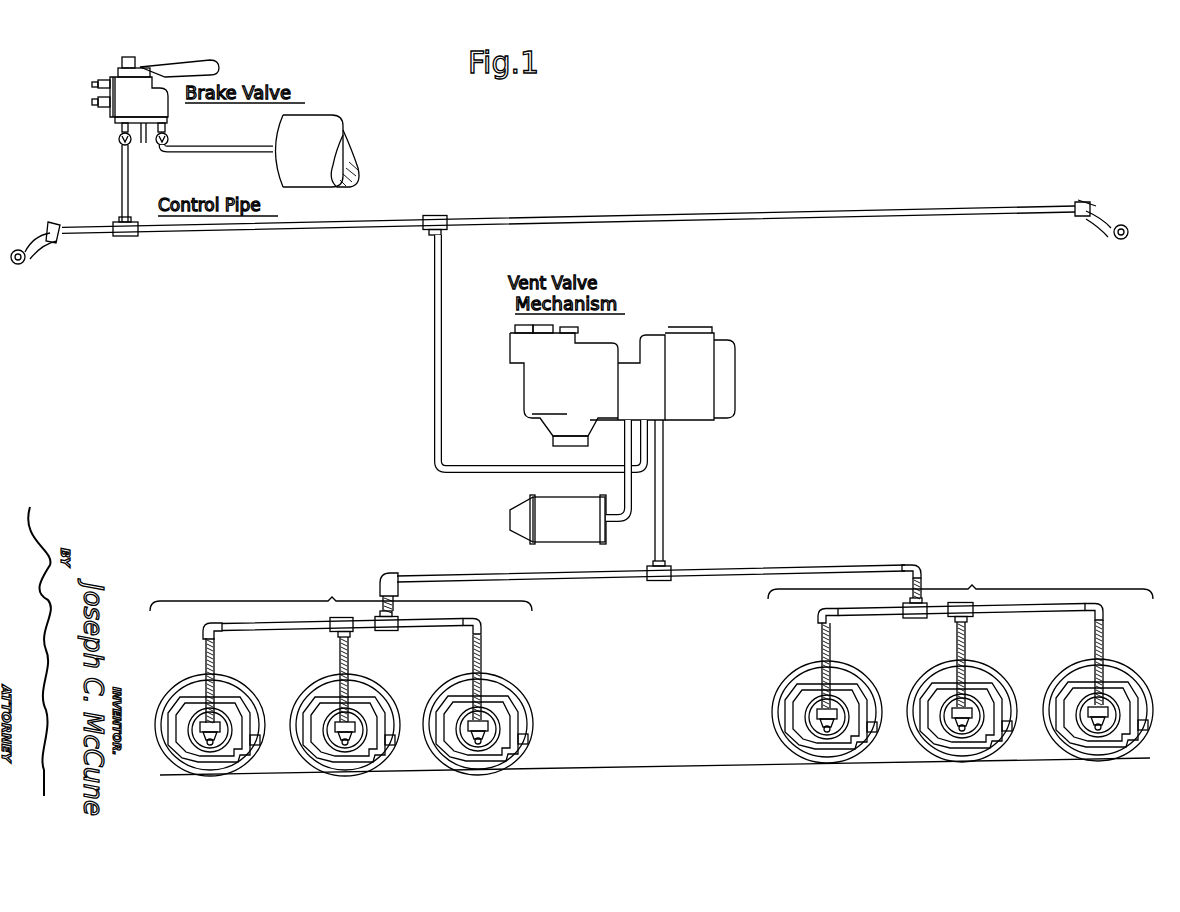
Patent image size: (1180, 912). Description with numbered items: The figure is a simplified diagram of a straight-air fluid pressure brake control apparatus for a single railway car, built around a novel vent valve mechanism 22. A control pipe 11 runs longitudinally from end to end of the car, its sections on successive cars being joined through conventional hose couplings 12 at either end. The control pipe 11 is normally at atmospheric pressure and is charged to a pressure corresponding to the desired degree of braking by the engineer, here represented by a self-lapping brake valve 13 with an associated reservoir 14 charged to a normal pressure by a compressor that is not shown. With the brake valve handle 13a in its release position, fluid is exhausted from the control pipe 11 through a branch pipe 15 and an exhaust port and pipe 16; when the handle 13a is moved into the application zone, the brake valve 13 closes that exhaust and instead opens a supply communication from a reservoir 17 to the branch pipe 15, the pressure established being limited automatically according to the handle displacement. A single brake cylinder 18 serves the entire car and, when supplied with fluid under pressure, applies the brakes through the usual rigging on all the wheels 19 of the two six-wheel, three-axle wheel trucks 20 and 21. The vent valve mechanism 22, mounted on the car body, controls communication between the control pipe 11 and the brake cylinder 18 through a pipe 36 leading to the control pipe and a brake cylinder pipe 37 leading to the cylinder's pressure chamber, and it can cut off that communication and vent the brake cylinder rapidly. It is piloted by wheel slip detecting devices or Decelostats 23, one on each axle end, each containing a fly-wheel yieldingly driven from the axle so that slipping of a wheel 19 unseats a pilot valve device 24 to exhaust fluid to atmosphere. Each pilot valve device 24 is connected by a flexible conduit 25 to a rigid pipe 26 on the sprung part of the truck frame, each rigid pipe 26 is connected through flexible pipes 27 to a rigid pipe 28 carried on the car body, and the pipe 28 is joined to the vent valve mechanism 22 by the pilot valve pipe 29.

The control pipe 11 is at (611, 217).
The hose couplings 12 is at (40, 255).
The brake valve 13 is at (110, 79).
The brake valve handle 13a is at (193, 68).
The reservoir 14 is at (344, 127).
The branch pipe 15 is at (121, 190).
The exhaust port and pipe 16 is at (147, 145).
The reservoir 17 is at (222, 130).
The brake cylinder 18 is at (510, 512).
The wheels 19 is at (245, 762).
The wheel truck 20 is at (341, 596).
The wheel truck 21 is at (960, 582).
The vent valve mechanism 22 is at (522, 384).
The wheel slip detecting devices 23 is at (226, 697).
The pilot valve device 24 is at (217, 724).
The flexible conduit 25 is at (205, 655).
The rigid pipe 26 is at (262, 630).
The flexible pipes 27 is at (382, 598).
The rigid pipe 28 is at (737, 572).
The pilot valve pipe 29 is at (665, 510).
The pipe 36 is at (434, 304).
The brake cylinder pipe 37 is at (625, 452).